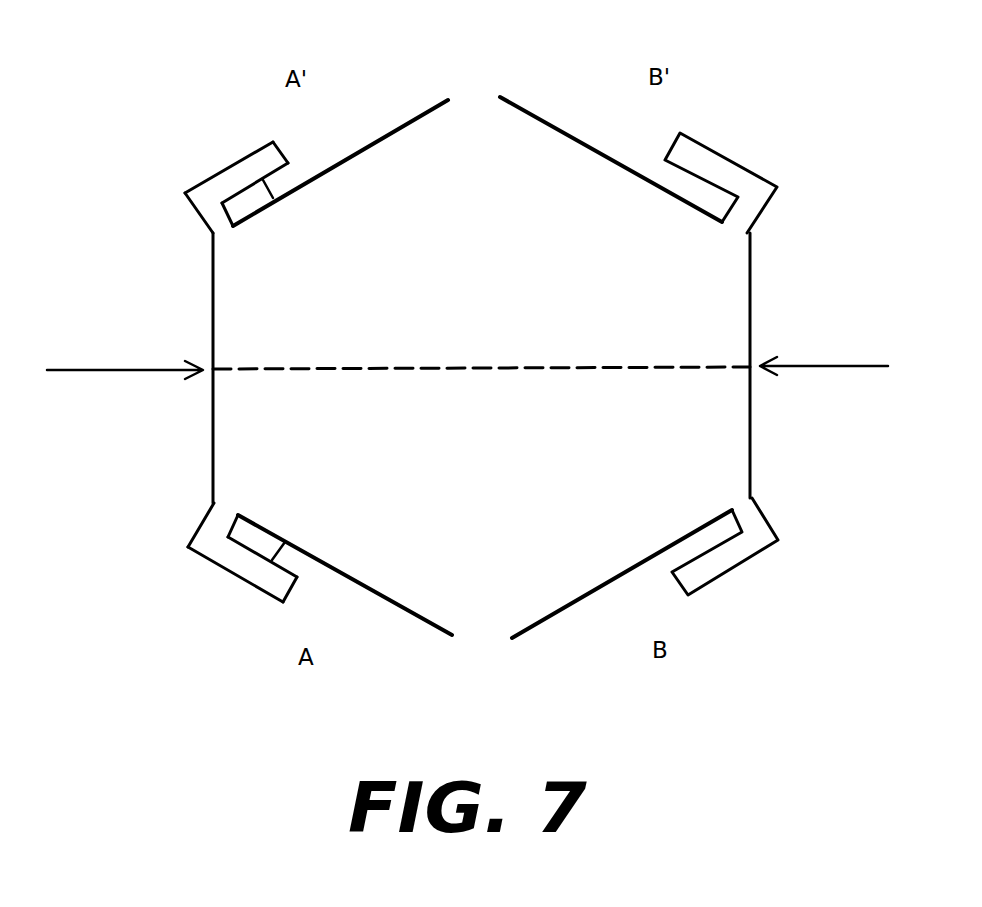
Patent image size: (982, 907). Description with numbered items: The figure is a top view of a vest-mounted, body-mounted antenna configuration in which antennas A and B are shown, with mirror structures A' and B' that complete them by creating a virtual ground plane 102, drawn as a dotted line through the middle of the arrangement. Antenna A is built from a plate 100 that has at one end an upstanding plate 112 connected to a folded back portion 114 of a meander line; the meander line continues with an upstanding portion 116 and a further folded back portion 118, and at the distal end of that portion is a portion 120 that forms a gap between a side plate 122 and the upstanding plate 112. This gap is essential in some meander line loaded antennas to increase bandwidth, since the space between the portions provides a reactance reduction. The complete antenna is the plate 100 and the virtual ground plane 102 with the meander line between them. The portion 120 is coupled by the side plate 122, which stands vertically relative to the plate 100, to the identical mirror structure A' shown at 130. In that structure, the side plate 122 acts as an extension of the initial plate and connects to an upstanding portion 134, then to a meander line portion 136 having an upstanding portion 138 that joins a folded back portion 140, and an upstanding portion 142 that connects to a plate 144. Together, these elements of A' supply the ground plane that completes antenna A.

The plate 100 is at (350, 577).
The virtual ground plane 102 is at (505, 367).
The upstanding plate 112 is at (230, 513).
The folded back portion 114 is at (273, 558).
The upstanding portion 116 is at (293, 587).
The folded back portion 118 is at (227, 572).
The portion 120 is at (205, 522).
The side plate 122 is at (212, 288).
The mirror structure 130 is at (371, 93).
The upstanding portion 134 is at (198, 214).
The portion of meander line 136 is at (233, 166).
The upstanding portion 138 is at (286, 140).
The folded back portion 140 is at (263, 182).
The upstanding portion 142 is at (224, 212).
The plate 144 is at (372, 145).